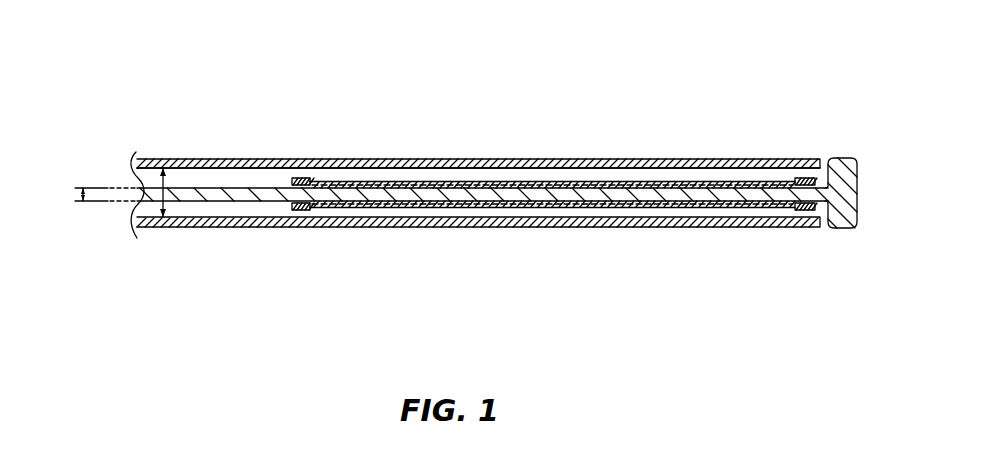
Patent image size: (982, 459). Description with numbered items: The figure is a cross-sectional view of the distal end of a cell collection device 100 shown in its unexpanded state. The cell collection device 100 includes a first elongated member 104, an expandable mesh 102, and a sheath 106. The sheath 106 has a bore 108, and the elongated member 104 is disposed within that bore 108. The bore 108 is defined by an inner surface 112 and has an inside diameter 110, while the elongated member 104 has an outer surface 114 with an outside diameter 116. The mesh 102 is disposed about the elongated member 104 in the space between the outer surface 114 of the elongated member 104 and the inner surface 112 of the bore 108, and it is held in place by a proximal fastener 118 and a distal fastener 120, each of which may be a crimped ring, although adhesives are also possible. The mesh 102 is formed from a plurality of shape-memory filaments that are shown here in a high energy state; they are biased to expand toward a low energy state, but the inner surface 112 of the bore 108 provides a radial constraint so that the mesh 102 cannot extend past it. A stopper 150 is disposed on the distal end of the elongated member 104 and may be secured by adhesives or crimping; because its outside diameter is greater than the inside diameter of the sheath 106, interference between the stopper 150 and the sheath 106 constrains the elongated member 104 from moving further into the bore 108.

The cell collection device 100 is at (465, 92).
The expandable mesh 102 is at (706, 208).
The first elongated member 104 is at (213, 195).
The sheath 106 is at (592, 222).
The bore 108 is at (198, 169).
The inside diameter 110 is at (178, 207).
The inner surface 112 is at (225, 176).
The outer surface 114 is at (257, 188).
The outside diameter 116 is at (76, 192).
The proximal fastener 118 is at (306, 178).
The distal fastener 120 is at (805, 178).
The stopper 150 is at (843, 229).